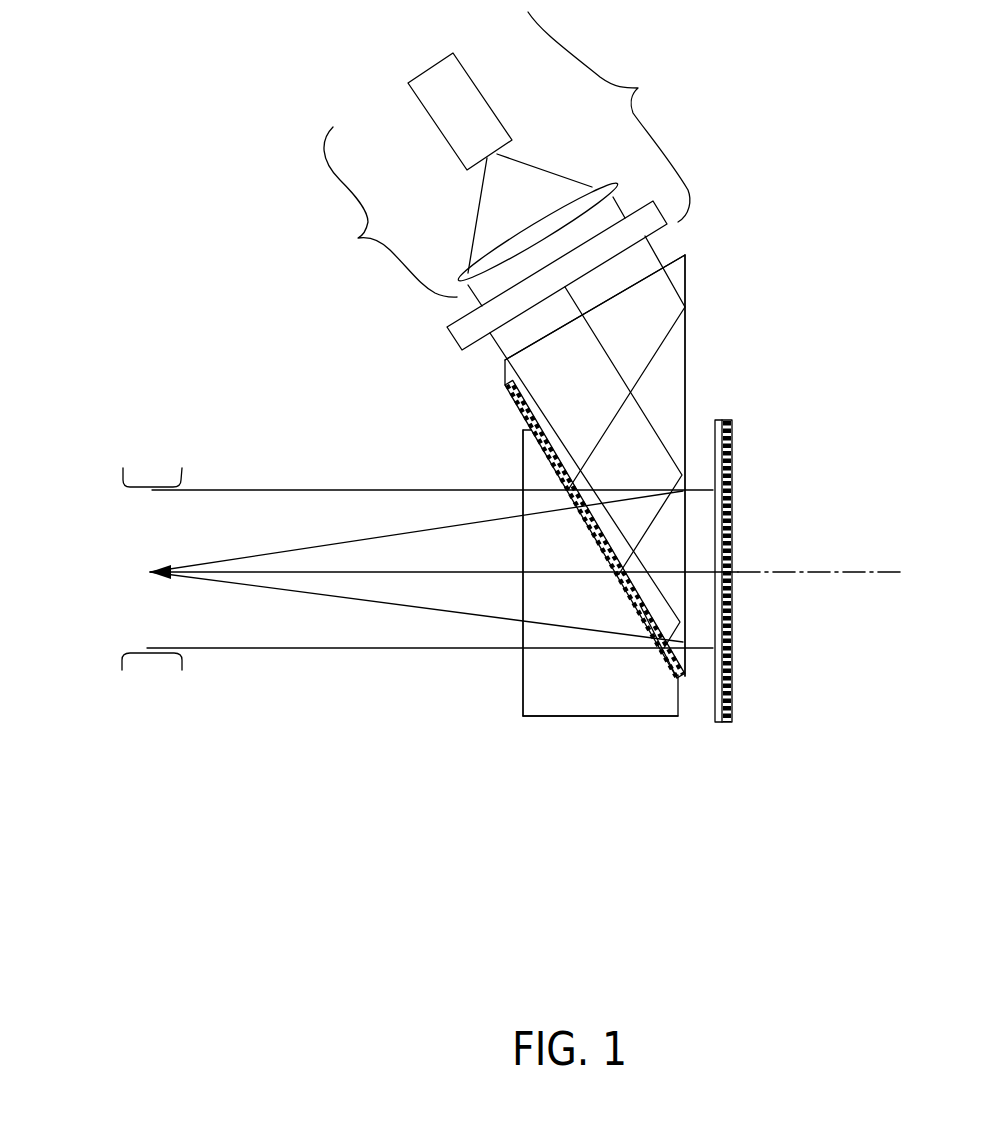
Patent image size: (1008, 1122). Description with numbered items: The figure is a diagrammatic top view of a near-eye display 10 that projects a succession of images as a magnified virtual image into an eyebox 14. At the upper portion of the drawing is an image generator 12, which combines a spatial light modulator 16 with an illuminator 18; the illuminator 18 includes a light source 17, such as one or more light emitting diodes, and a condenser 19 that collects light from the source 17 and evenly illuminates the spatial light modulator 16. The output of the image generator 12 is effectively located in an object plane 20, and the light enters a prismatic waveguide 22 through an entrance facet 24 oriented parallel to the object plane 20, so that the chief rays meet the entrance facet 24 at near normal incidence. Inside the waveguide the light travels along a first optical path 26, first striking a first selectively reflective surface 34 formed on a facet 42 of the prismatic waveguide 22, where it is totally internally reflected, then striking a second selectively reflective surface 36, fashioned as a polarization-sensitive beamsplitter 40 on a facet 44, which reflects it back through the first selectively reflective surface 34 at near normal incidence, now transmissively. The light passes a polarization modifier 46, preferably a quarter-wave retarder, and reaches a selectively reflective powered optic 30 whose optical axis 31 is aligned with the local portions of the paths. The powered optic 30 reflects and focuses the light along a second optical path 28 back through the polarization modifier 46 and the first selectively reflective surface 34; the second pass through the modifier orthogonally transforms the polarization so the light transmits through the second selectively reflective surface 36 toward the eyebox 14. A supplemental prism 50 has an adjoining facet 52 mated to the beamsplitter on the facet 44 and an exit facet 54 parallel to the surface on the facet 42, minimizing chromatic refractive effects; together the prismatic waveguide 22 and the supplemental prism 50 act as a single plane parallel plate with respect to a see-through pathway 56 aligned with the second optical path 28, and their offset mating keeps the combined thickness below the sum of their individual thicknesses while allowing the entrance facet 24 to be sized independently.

The near-eye display 10 is at (266, 152).
The image generator 12 is at (609, 117).
The eyebox 14 is at (137, 490).
The spatial light modulator 16 is at (447, 327).
The light source 17 is at (413, 118).
The illuminator 18 is at (447, 212).
The condenser 19 is at (603, 182).
The object plane 20 is at (657, 238).
The prismatic waveguide 22 is at (698, 288).
The entrance facet 24 is at (507, 360).
The first optical path 26 is at (630, 372).
The second optical path 28 is at (318, 585).
The selectively reflective powered optic 30 is at (732, 477).
The optical axis 31 is at (853, 572).
The first selectively reflective surface 34 is at (685, 362).
The second selectively reflective surface 36 is at (595, 529).
The polarization-sensitive beamsplitter 40 is at (668, 660).
The facet 42 is at (779, 465).
The facet 44 is at (545, 467).
The polarization modifier 46 is at (715, 690).
The supplemental prism 50 is at (615, 728).
The adjoining facet 52 is at (640, 603).
The exit facet 54 is at (523, 668).
The see-through pathway 56 is at (278, 557).